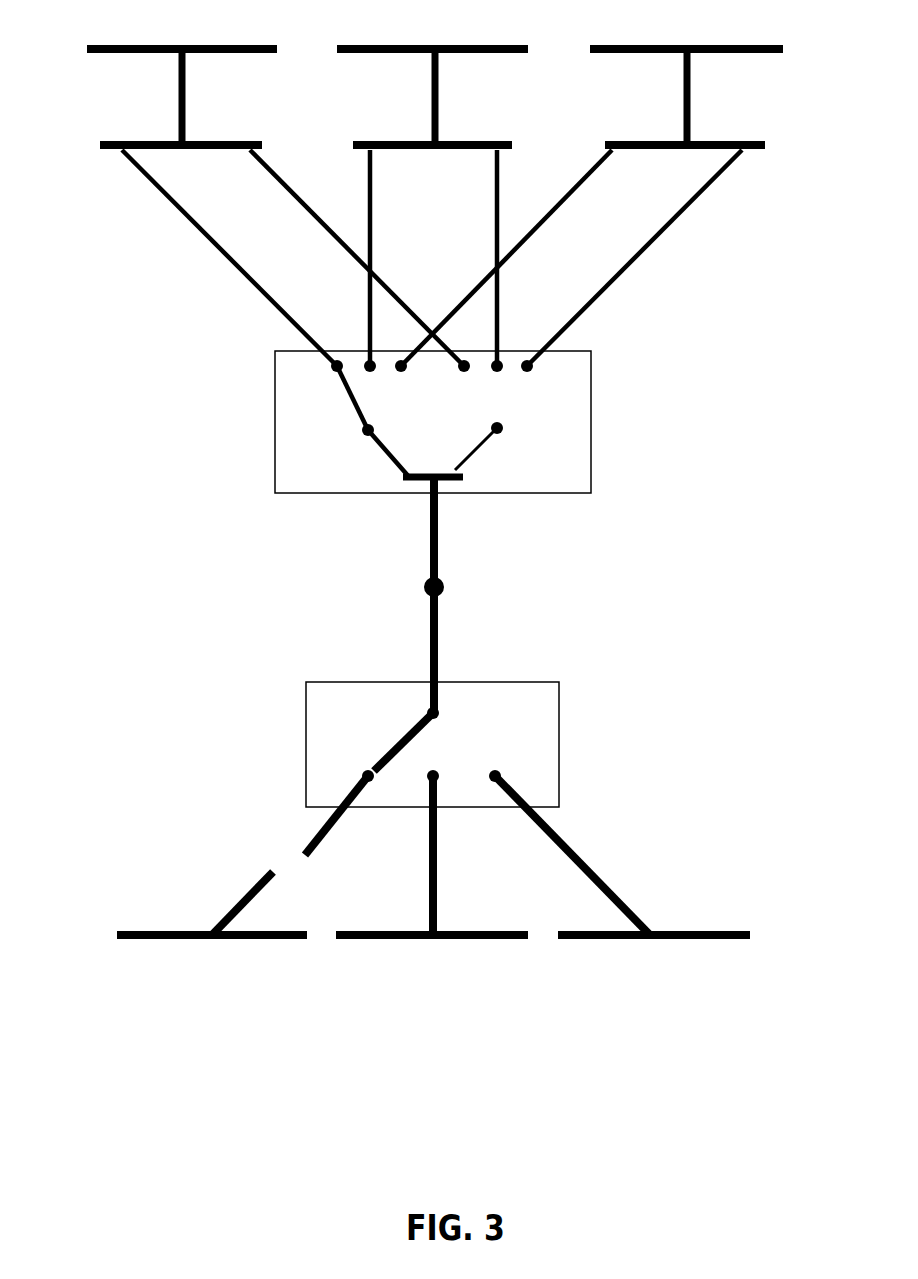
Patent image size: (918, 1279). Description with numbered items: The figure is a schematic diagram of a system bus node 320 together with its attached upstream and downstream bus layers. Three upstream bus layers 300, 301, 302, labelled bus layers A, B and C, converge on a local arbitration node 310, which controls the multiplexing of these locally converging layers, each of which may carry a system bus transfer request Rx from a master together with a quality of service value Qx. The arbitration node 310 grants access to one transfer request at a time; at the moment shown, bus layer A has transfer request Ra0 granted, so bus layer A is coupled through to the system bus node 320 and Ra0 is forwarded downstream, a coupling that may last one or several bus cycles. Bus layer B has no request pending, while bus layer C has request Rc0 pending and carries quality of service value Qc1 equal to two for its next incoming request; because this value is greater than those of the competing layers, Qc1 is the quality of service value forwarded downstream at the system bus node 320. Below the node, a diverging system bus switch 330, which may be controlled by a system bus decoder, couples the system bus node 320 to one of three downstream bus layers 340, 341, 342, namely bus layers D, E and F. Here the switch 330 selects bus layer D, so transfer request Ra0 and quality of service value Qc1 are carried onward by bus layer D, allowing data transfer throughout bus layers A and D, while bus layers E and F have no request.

The upstream bus layer 300 is at (175, 140).
The upstream bus layer 301 is at (425, 138).
The upstream bus layer 302 is at (680, 140).
The local arbitration node 310 is at (275, 445).
The system bus node 320 is at (425, 587).
The diverging system bus switch 330 is at (306, 757).
The downstream bus layer 340 is at (205, 930).
The downstream bus layer 341 is at (425, 930).
The downstream bus layer 342 is at (662, 930).